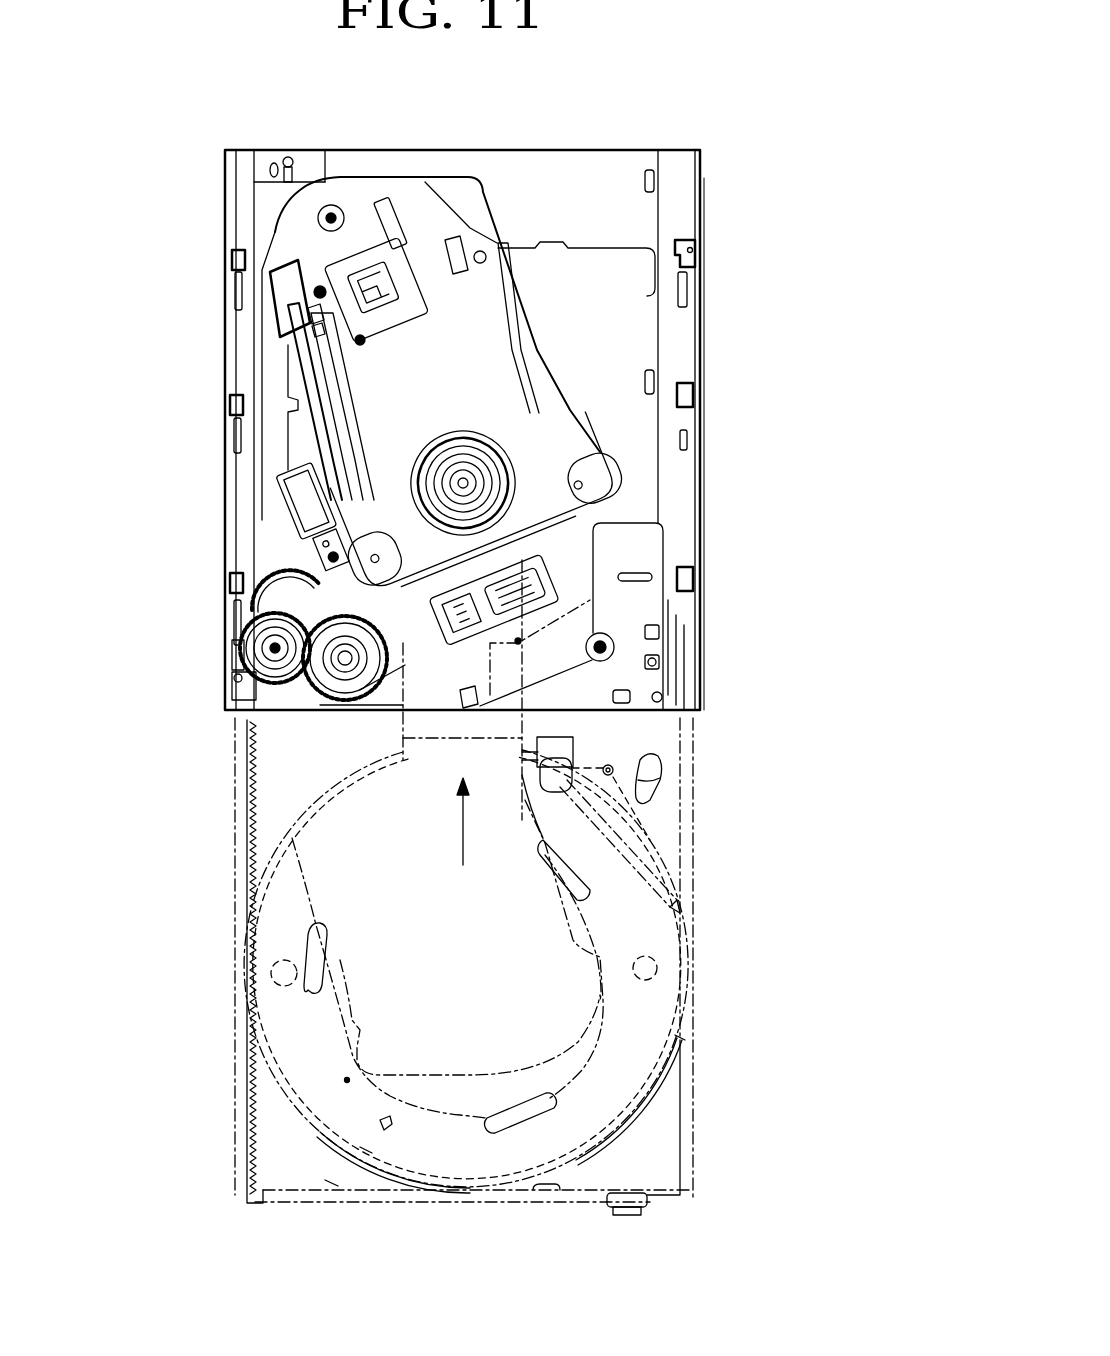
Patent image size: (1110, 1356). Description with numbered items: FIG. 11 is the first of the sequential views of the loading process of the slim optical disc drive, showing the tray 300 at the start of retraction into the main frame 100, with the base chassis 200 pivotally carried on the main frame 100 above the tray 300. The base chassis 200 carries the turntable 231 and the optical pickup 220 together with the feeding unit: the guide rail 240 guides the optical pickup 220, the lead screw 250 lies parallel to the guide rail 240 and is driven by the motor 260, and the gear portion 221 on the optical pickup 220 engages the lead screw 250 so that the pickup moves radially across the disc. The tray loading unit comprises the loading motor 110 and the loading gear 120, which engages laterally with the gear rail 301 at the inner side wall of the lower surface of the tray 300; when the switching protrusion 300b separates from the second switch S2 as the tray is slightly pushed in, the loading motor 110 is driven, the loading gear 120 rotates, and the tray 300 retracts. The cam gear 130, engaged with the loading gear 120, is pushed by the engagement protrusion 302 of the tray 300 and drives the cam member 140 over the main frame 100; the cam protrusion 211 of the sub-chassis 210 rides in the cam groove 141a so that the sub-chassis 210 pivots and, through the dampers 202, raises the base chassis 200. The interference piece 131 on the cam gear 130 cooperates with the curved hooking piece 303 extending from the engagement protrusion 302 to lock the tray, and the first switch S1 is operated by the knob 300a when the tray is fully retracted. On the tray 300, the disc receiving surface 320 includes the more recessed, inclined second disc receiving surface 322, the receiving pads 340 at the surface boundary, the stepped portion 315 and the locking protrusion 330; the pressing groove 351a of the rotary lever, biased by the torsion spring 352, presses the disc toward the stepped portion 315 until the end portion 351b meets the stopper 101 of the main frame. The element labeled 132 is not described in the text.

The main frame 100 is at (160, 262).
The stopper 101 is at (655, 278).
The loading motor 110 is at (295, 493).
The loading gear 120 is at (232, 650).
The cam gear 130 is at (265, 590).
The interference piece 131 is at (320, 712).
The cam member 132 is at (408, 716).
The cam member 140 is at (384, 712).
The cam groove 141a is at (516, 643).
The base chassis 200 is at (463, 182).
The dampers 202 is at (600, 485).
The sub-chassis 210 is at (580, 543).
The cam protrusion 211 is at (652, 578).
The optical pickup 220 is at (382, 248).
The gear portion 221 is at (300, 342).
The turntable 231 is at (464, 432).
The guide rail 240 is at (507, 331).
The lead screw 250 is at (318, 432).
The motor 260 is at (300, 318).
The tray 300 is at (692, 888).
The knob 300a is at (628, 1215).
The switching protrusion 300b is at (660, 632).
The gear rail 301 is at (250, 745).
The engagement protrusion 302 is at (388, 1128).
The hooking piece 303 is at (367, 1153).
The stepped portion 315 is at (331, 1186).
The disc receiving surface 320 is at (665, 1000).
The second disc receiving surface 322 is at (563, 1050).
The locking protrusion 330 is at (313, 1128).
The receiving pads 340 is at (306, 950).
The pressing groove 351a is at (553, 782).
The end portion 351b is at (655, 775).
The torsion spring 352 is at (648, 830).
The first switch S1 is at (662, 692).
The second switch S2 is at (660, 663).